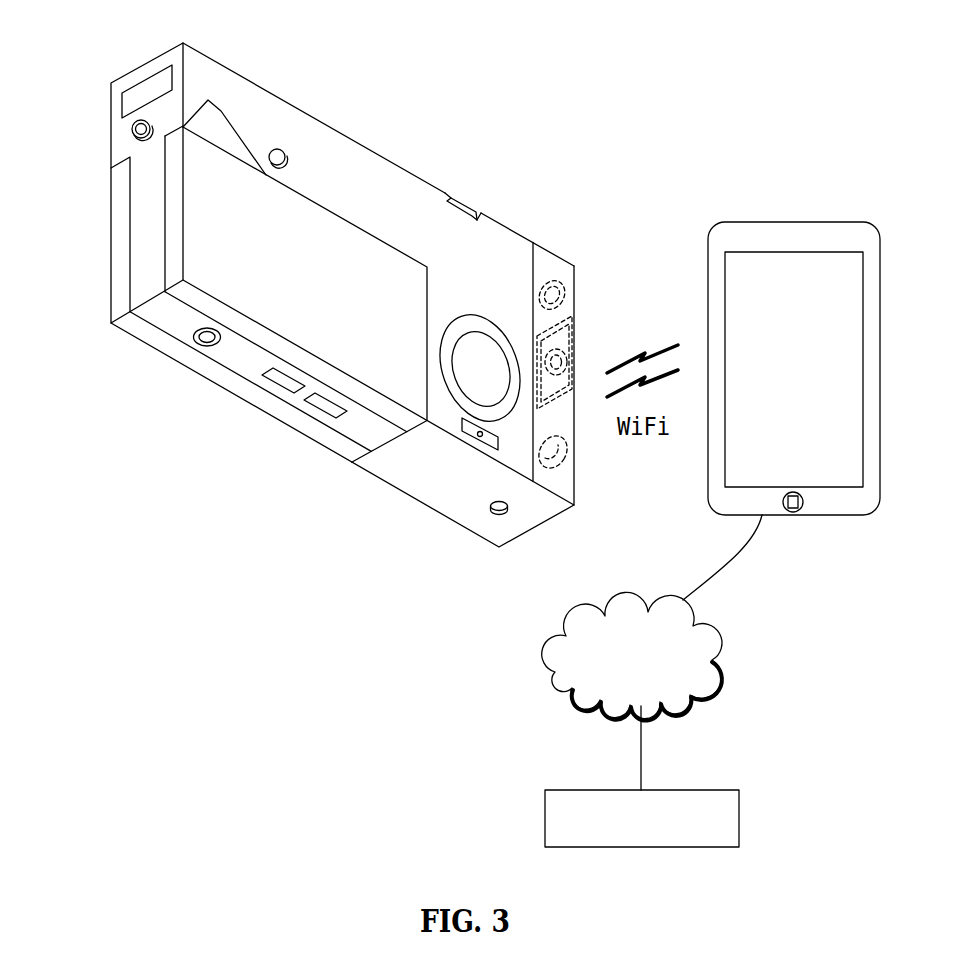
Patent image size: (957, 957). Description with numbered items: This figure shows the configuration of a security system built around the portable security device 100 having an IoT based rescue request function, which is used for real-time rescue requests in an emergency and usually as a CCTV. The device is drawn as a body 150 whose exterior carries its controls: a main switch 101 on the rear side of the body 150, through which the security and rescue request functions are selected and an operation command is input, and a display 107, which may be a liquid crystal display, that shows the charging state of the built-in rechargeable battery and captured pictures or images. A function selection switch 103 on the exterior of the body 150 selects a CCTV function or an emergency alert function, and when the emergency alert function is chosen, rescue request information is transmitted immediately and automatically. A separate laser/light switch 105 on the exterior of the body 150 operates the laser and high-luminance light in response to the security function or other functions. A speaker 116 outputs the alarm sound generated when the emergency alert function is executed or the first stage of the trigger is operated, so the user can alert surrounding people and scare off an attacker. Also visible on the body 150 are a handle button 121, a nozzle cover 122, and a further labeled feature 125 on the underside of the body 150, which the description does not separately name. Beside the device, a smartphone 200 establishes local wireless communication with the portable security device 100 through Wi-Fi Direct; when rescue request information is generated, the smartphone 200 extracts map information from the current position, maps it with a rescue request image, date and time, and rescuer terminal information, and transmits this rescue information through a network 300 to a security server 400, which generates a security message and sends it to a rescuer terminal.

The portable security device 100 is at (437, 124).
The main switch 101 is at (133, 131).
The function selection switch 103 is at (458, 198).
The laser/light switch 105 is at (496, 512).
The display 107 is at (145, 87).
The speaker 116 is at (473, 362).
The handle button 121 is at (278, 148).
The nozzle cover 122 is at (322, 410).
The bottom hole 125 is at (206, 346).
The body 150 is at (353, 137).
The smartphone 200 is at (792, 222).
The network 300 is at (716, 647).
The security server 400 is at (740, 817).